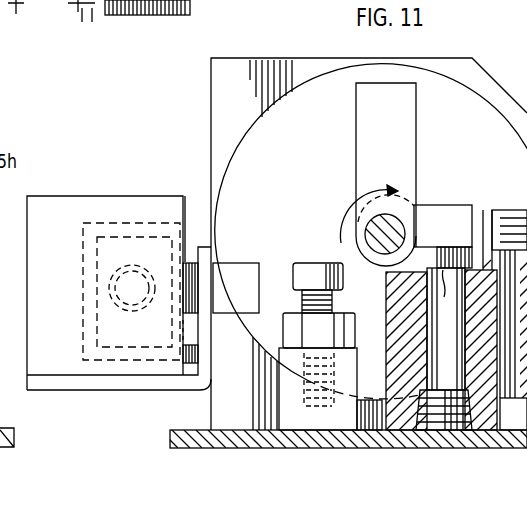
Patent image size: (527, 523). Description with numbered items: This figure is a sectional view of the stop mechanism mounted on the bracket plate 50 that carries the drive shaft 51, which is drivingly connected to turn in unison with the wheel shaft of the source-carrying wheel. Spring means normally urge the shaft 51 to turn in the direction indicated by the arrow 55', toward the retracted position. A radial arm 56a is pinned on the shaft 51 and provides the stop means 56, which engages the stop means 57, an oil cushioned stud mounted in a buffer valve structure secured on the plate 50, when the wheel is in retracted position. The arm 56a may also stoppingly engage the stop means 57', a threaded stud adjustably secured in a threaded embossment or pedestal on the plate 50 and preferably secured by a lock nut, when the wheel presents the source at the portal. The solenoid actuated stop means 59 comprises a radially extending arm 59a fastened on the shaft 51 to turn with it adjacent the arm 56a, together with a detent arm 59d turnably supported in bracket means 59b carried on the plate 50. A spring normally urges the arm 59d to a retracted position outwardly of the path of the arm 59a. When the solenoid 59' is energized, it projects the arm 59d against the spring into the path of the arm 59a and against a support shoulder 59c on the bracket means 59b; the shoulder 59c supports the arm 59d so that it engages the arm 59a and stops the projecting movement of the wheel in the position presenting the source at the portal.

The bracket plate 50 is at (357, 438).
The drive shaft 51 is at (376, 243).
The arrow 55' is at (355, 208).
The stop means 56 is at (454, 204).
The radial arm 56a is at (443, 236).
The stop means 57 is at (493, 320).
The stop means 57' is at (330, 330).
The stop means 59 is at (352, 180).
The solenoid 59' is at (106, 293).
The radially extending arm 59a is at (386, 165).
The bracket means 59b is at (153, 384).
The support shoulder 59c is at (200, 314).
The detent arm 59d is at (221, 313).